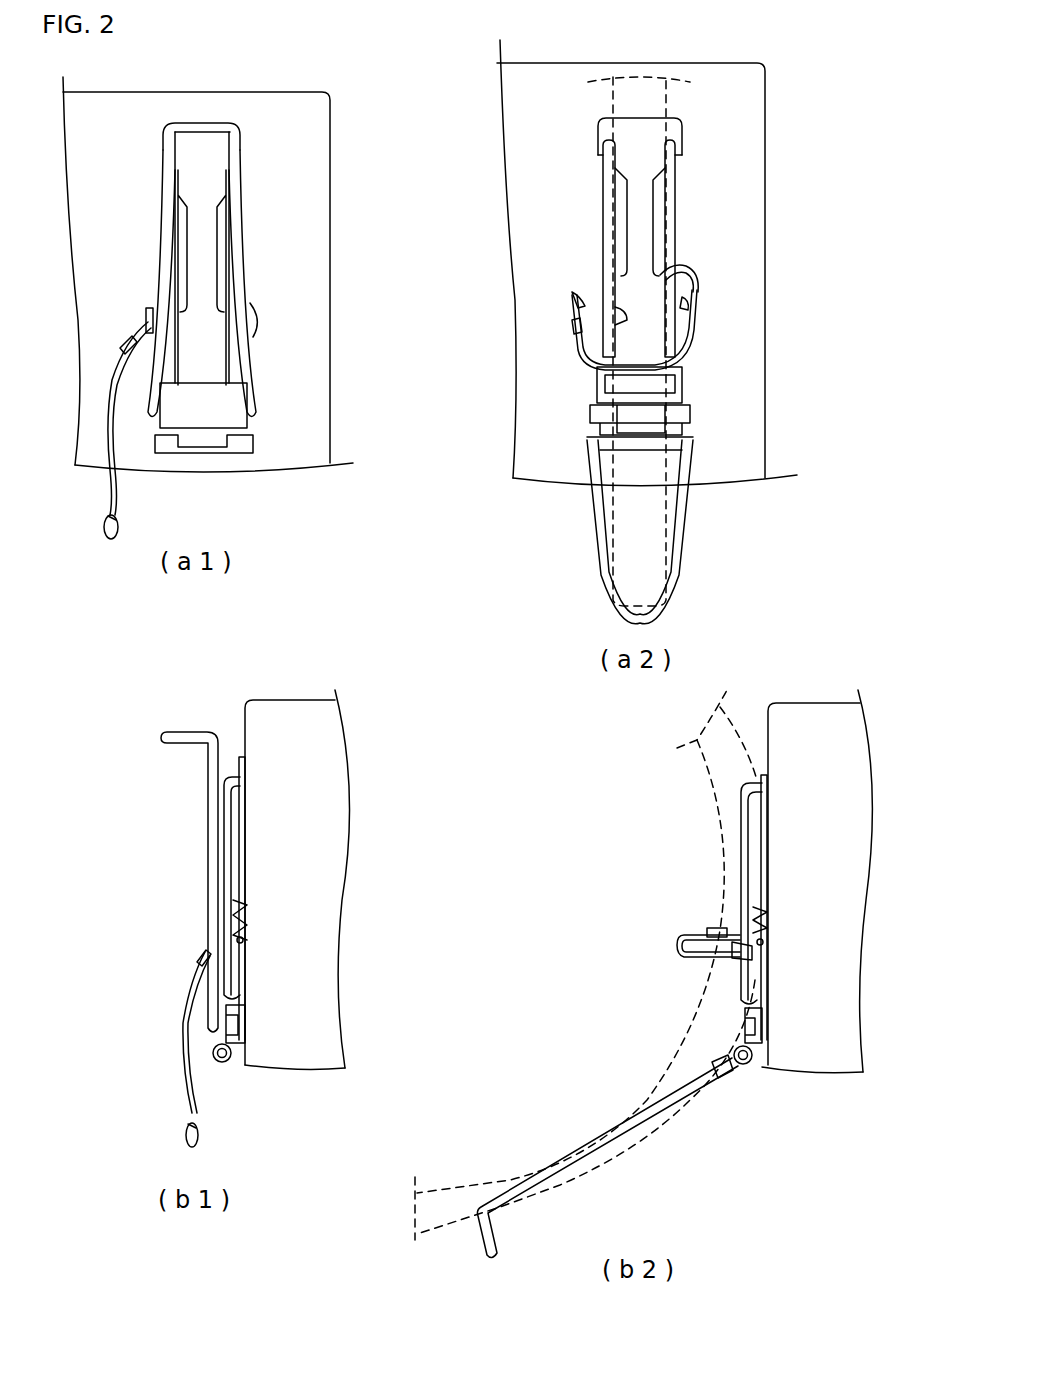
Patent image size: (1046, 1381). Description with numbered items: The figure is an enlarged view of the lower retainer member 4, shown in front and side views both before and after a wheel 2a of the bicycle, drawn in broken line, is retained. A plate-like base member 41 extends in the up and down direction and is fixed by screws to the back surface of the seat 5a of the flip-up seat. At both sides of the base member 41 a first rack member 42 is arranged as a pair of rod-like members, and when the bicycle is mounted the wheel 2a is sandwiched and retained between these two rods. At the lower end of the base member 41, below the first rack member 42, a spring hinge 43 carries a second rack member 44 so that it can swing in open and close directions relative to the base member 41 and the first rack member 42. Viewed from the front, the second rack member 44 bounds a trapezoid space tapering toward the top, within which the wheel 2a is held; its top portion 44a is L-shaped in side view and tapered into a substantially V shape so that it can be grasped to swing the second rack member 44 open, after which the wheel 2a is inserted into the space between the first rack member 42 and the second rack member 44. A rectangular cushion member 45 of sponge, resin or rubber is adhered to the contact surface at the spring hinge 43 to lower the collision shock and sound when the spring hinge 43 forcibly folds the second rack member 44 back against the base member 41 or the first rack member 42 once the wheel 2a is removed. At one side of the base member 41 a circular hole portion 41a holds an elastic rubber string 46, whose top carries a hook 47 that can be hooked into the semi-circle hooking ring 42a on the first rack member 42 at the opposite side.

The wheel 2a is at (610, 106).
The lower retainer member 4 is at (255, 163).
The seat 5a is at (317, 235).
The base member 41 is at (210, 182).
The circular hole portion 41a is at (247, 940).
The first rack member 42 is at (222, 322).
The semi-circle hooking ring 42a is at (253, 320).
The spring hinge 43 is at (250, 445).
The second rack member 44 is at (243, 253).
The top portion 44a is at (208, 127).
The cushion member 45 is at (670, 385).
The rubber string 46 is at (105, 437).
The hook 47 is at (103, 521).